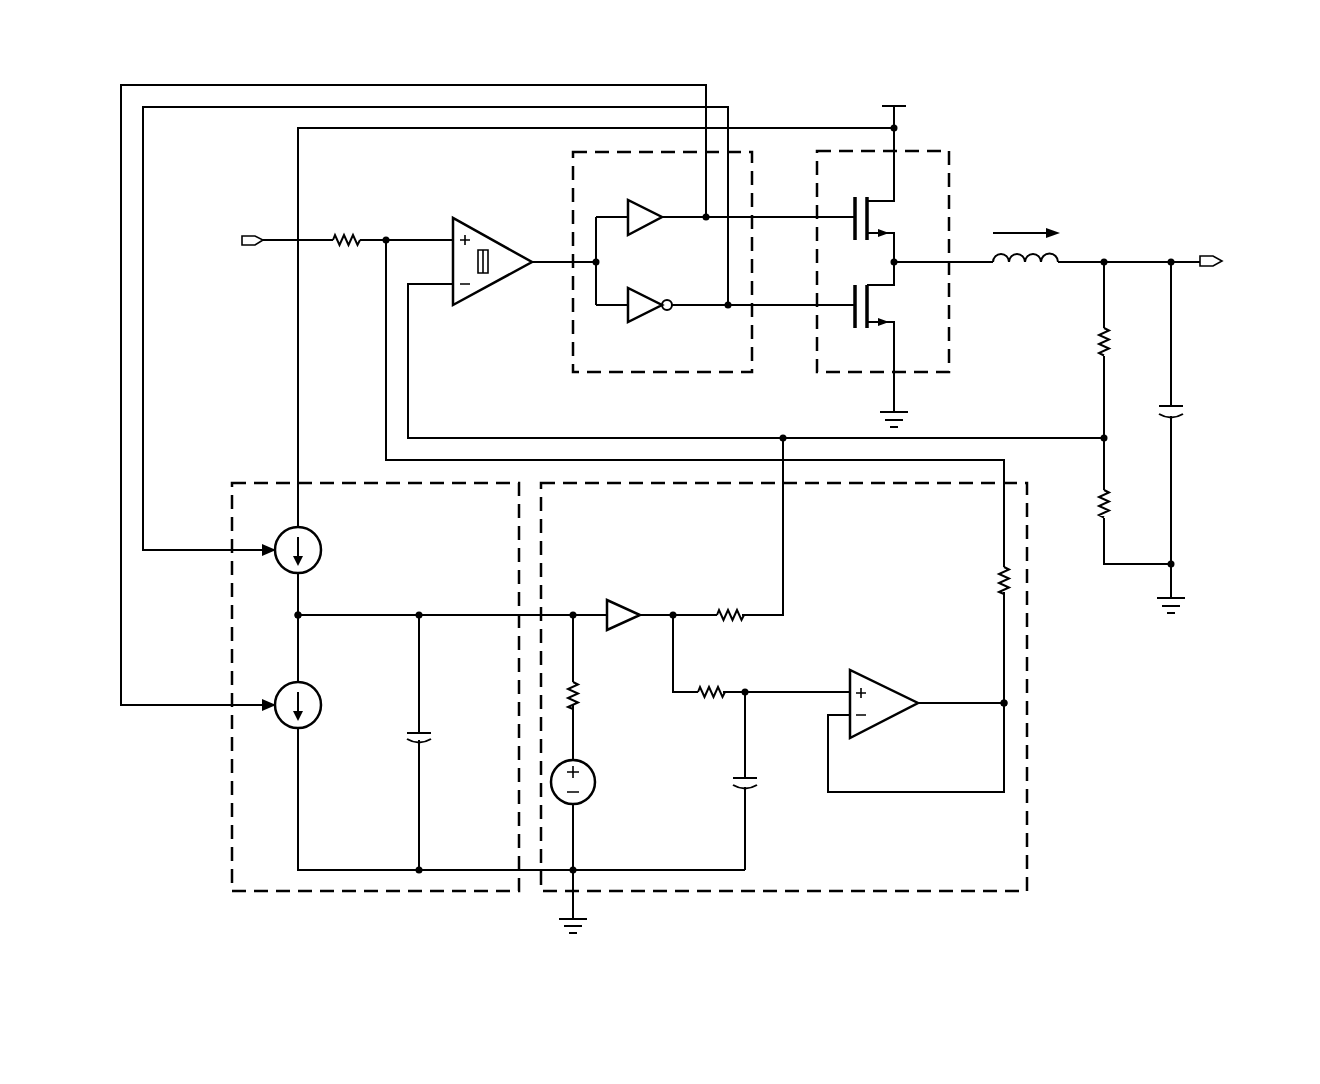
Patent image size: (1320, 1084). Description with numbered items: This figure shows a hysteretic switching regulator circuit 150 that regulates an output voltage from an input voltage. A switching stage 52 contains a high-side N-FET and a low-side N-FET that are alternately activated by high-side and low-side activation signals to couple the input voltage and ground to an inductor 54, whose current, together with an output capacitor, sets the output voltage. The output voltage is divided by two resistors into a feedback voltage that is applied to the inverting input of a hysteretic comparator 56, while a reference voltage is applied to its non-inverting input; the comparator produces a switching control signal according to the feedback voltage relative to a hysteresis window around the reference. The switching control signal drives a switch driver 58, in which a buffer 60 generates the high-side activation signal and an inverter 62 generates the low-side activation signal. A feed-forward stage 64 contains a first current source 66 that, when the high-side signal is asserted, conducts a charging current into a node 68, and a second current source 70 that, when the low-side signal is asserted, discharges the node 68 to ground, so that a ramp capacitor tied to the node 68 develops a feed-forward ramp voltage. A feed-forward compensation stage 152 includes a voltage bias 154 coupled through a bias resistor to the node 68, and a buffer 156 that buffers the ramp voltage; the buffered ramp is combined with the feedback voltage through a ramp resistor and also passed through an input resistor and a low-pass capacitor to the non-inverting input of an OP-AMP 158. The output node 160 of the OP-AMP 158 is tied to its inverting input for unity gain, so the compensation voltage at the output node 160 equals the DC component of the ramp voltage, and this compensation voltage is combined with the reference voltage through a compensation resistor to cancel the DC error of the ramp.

The hysteretic switching regulator circuit 150 is at (1227, 180).
The switching stage 52 is at (953, 182).
The inductor 54 is at (1052, 252).
The hysteretic comparator 56 is at (493, 248).
The switch driver 58 is at (571, 182).
The buffer 60 is at (646, 210).
The inverter 62 is at (648, 315).
The feed-forward stage 64 is at (231, 753).
The first current source 66 is at (318, 534).
The node 68 is at (295, 617).
The second current source 70 is at (310, 726).
The feed-forward compensation stage 152 is at (1030, 753).
The voltage bias 154 is at (583, 805).
The buffer 156 is at (626, 606).
The OP-AMP 158 is at (882, 722).
The output node 160 is at (1001, 708).